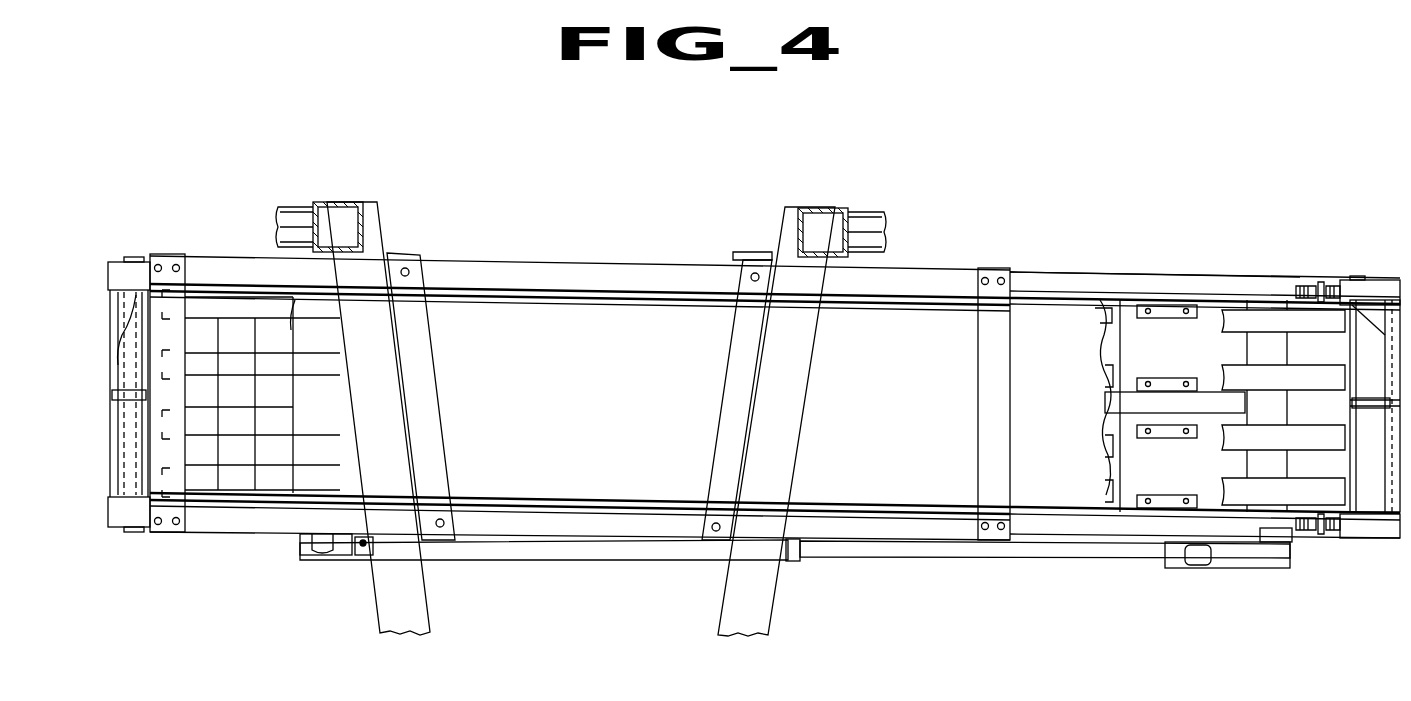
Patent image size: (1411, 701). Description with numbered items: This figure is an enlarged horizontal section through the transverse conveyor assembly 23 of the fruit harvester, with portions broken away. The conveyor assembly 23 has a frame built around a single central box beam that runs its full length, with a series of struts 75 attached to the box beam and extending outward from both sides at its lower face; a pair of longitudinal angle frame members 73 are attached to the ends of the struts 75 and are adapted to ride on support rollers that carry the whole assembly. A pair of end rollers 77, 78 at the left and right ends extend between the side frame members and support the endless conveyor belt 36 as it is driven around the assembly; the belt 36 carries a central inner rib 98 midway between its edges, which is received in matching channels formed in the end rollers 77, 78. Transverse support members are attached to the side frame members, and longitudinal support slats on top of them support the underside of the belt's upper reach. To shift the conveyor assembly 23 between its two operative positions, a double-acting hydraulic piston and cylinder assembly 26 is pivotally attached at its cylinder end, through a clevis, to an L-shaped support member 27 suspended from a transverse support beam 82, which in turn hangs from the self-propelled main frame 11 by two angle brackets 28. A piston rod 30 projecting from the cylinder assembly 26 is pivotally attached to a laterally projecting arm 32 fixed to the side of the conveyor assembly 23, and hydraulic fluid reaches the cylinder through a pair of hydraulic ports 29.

The main frame 11 is at (830, 206).
The transverse conveyor assembly 23 is at (1046, 268).
The double-acting hydraulic piston and cylinder assembly 26 is at (636, 562).
The L-shaped support member 27 is at (300, 548).
The angle brackets 28 is at (432, 415).
The hydraulic ports 29 is at (365, 556).
The piston rod 30 is at (1012, 558).
The laterally projecting arm 32 is at (1286, 546).
The endless conveyor belt 36 is at (908, 409).
The longitudinal angle frame members 73 is at (1122, 288).
The struts 75 is at (1162, 367).
The end roller 77 is at (128, 354).
The end roller 78 is at (1370, 520).
The transverse support beam 82 is at (577, 270).
The central inner rib 98 is at (125, 401).